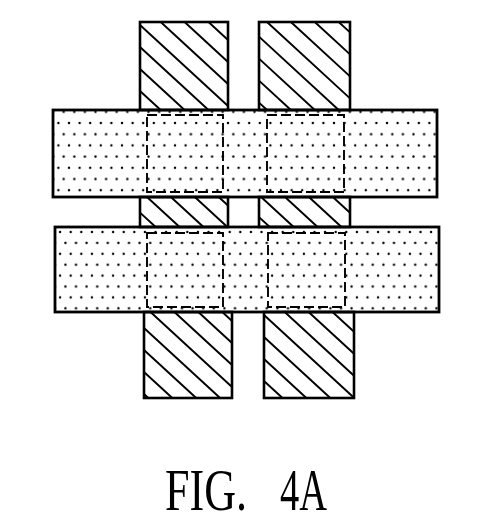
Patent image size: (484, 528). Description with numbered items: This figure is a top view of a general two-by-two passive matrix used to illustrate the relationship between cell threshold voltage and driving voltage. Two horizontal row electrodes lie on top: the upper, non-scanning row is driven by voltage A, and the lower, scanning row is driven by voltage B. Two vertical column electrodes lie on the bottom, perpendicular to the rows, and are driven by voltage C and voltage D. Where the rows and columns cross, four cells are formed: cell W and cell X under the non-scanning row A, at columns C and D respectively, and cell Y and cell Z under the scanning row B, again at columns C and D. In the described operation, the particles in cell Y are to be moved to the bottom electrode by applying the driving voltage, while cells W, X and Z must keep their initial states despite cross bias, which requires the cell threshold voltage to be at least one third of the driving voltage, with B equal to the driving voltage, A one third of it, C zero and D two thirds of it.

The voltage A is at (53, 155).
The voltage B is at (55, 270).
The voltage C is at (190, 400).
The voltage D is at (308, 400).
The cell W is at (142, 135).
The cell X is at (345, 133).
The cell Y is at (145, 288).
The cell Z is at (352, 288).